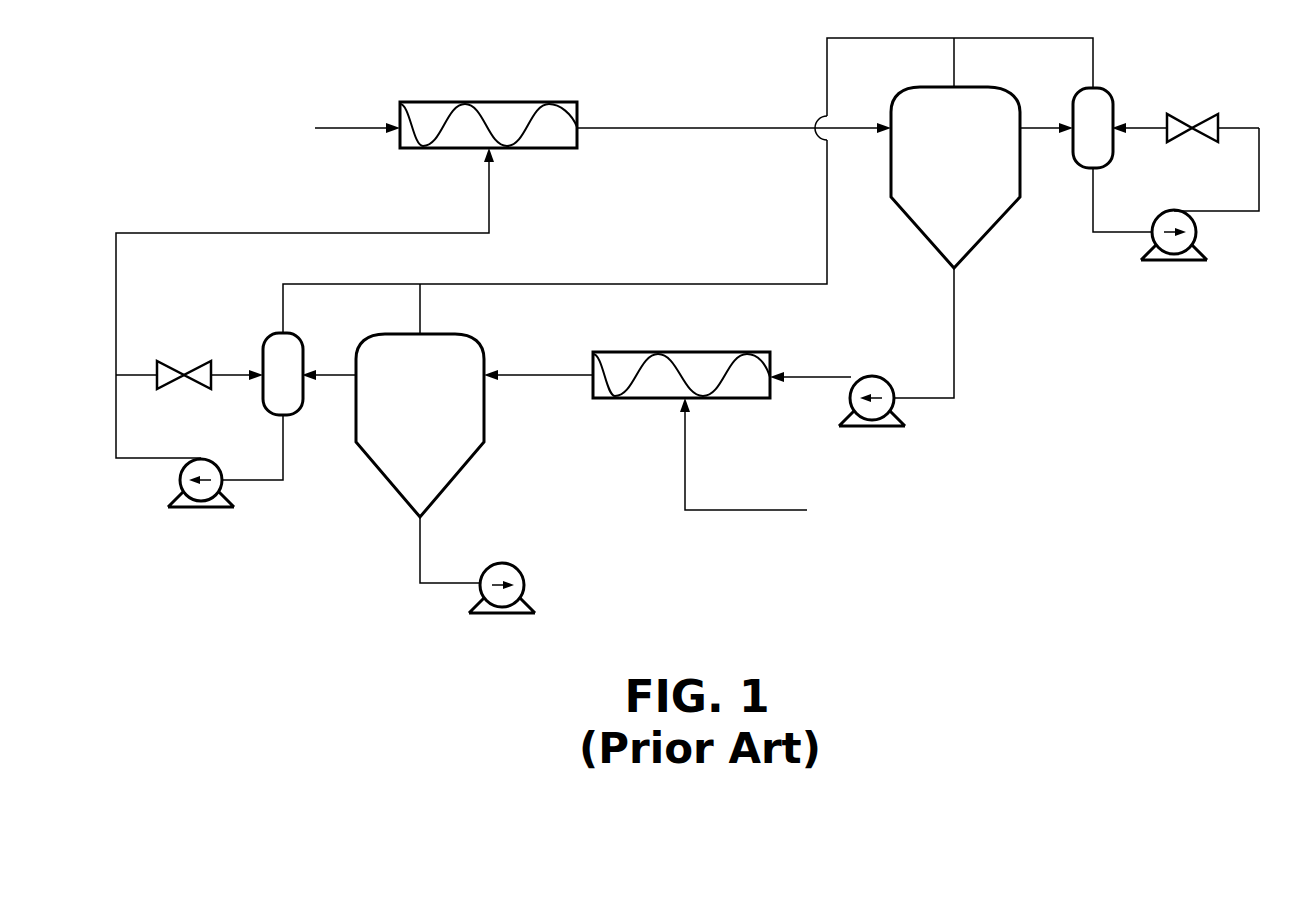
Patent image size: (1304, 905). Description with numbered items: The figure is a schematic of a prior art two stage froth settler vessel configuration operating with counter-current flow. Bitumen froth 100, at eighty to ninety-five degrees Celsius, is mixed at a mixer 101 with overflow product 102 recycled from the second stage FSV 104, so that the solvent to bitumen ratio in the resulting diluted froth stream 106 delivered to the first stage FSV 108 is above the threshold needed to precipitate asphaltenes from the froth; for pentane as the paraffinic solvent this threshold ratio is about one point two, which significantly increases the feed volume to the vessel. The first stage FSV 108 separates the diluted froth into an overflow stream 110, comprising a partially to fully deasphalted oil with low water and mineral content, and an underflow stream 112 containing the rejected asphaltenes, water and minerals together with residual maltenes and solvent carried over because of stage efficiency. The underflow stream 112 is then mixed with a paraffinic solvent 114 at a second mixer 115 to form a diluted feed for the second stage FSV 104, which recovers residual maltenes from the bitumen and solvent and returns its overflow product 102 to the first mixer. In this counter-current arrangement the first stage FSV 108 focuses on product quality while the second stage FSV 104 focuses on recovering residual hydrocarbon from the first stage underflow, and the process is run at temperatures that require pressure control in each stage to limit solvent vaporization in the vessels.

The bitumen froth 100 is at (345, 126).
The mixer 101 is at (505, 102).
The overflow product 102 is at (490, 197).
The second stage FSV 104 is at (440, 468).
The diluted froth stream 106 is at (855, 125).
The first stage FSV 108 is at (975, 222).
The overflow stream 110 is at (1038, 126).
The underflow stream 112 is at (958, 272).
The paraffinic solvent 114 is at (687, 452).
The mixer 115 is at (700, 352).